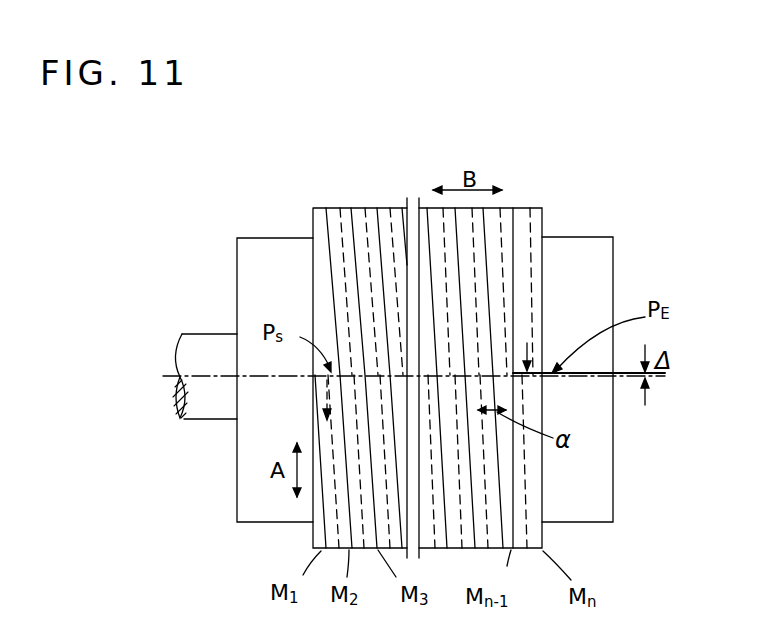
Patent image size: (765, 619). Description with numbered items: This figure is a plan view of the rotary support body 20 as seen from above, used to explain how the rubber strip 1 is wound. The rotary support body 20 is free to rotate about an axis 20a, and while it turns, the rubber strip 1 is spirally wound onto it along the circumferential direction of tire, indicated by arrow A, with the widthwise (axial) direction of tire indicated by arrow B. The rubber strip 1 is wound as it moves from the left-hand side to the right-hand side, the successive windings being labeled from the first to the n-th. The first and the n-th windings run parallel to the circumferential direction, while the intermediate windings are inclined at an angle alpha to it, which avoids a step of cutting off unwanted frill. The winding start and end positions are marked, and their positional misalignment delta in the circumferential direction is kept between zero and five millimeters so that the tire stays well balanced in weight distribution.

The rubber strip 1 is at (535, 215).
The rotary support body 20 is at (247, 469).
The axis 20a is at (176, 417).